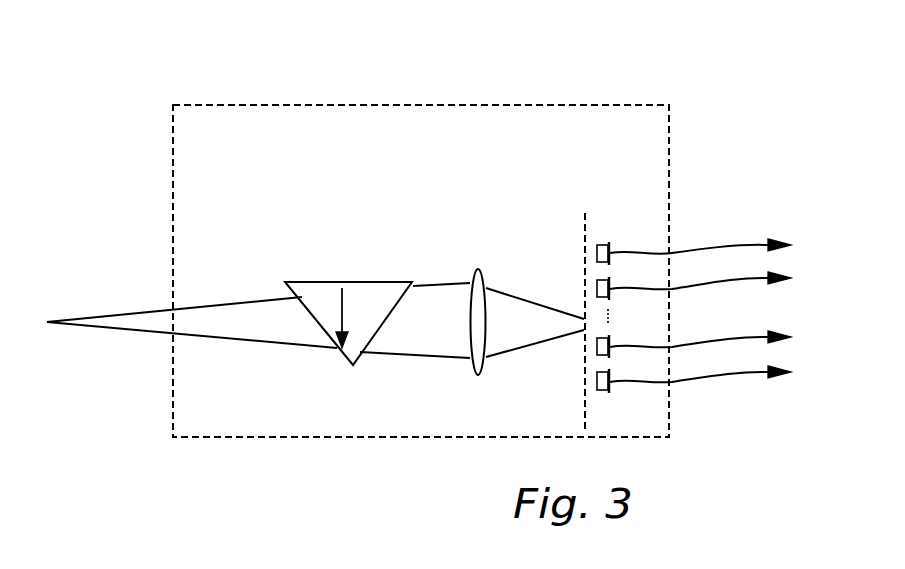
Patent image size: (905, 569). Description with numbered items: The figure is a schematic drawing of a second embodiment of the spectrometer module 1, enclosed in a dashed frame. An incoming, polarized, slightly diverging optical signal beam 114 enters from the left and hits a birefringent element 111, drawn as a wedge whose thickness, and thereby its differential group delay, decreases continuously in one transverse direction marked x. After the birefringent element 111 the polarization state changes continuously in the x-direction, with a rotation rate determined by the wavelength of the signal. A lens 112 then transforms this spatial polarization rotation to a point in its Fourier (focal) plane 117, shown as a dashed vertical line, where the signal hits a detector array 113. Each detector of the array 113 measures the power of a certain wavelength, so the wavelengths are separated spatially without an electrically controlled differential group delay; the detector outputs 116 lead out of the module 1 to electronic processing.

The spectrometer module 1 is at (370, 105).
The birefringent element 111 is at (337, 265).
The lens 112 is at (470, 265).
The detector array 113 is at (608, 240).
The optical signal beam 114 is at (80, 305).
The output signals to electronic processing 116 is at (703, 261).
The Fourier (focal) plane 117 is at (583, 200).